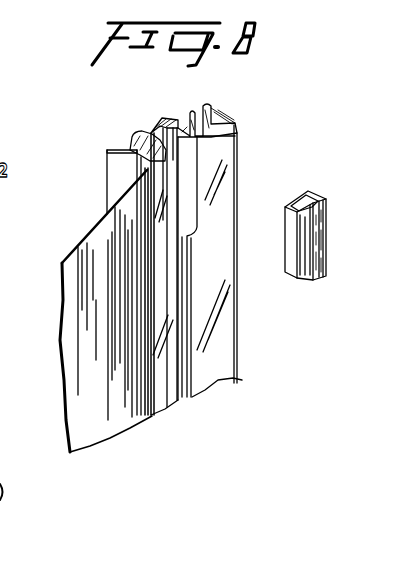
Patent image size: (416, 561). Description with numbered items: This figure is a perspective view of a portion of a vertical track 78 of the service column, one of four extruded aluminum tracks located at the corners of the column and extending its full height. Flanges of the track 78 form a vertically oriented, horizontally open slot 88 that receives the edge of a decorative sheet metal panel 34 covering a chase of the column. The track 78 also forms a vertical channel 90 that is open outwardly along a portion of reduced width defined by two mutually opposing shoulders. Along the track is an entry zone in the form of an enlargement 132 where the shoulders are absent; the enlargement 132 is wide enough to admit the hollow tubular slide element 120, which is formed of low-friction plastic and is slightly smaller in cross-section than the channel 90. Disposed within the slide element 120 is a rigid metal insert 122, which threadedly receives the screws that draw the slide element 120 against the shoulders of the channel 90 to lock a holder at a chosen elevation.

The sheet metal panel 34 is at (63, 252).
The vertical track 78 is at (246, 167).
The slot 88 is at (132, 143).
The vertical channel 90 is at (182, 360).
The slide element 120 is at (326, 238).
The rigid insert 122 is at (310, 192).
The enlargement 132 is at (185, 160).